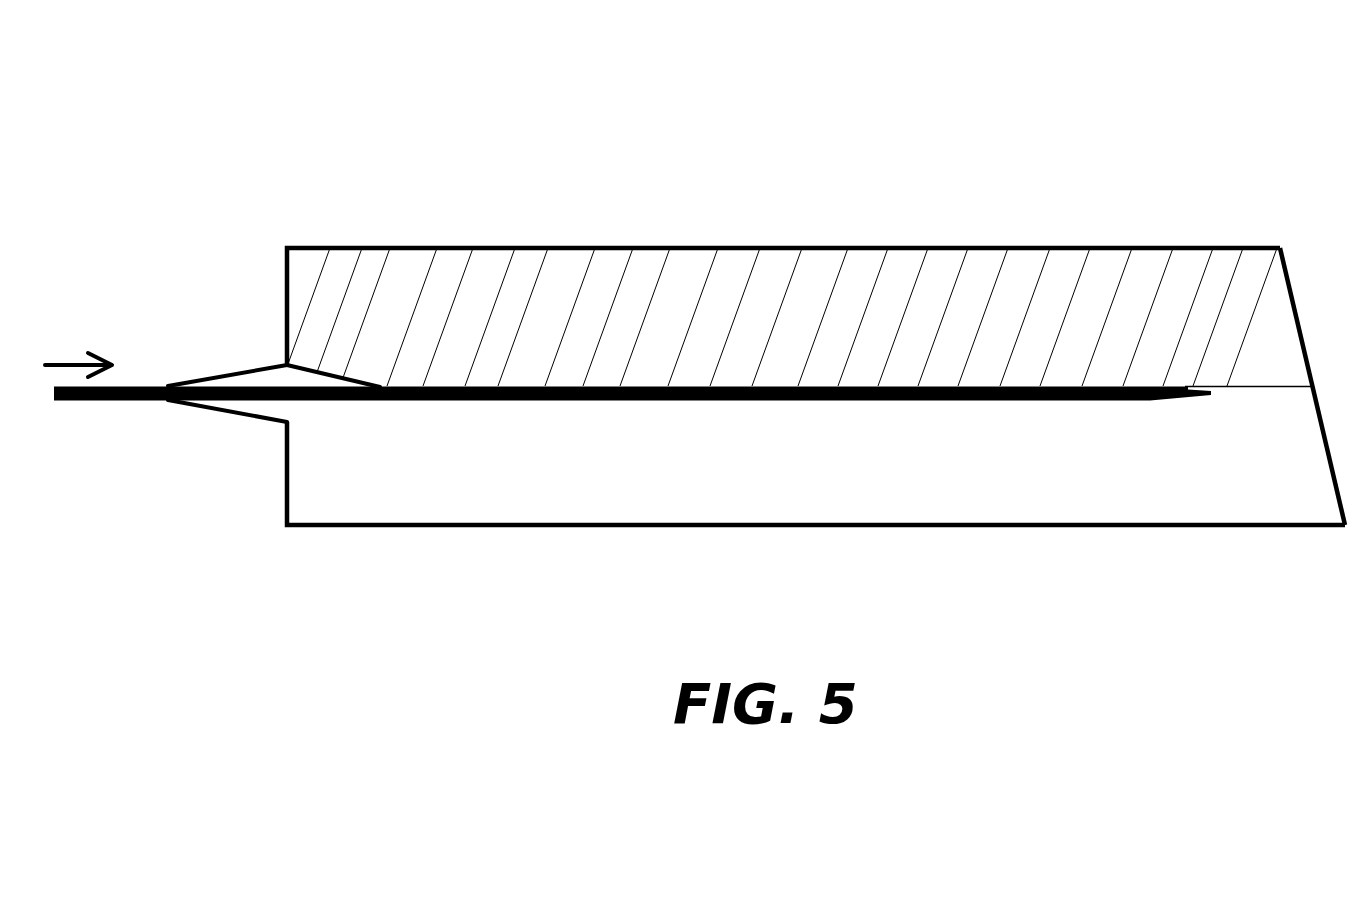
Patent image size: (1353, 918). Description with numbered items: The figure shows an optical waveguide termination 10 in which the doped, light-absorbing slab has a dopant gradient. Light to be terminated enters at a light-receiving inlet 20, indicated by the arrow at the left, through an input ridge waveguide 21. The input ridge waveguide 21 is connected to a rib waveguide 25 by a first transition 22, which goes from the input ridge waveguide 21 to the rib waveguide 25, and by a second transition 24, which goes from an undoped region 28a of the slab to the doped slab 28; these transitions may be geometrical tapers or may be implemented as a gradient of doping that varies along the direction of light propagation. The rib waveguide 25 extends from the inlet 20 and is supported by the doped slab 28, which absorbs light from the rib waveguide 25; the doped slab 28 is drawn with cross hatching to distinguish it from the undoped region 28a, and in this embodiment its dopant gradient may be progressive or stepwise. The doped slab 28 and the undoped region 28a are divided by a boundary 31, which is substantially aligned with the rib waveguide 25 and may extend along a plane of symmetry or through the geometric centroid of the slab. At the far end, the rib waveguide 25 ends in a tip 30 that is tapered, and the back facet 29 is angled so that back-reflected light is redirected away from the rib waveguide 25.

The optical waveguide termination 10 is at (308, 75).
The light-receiving inlet 20 is at (216, 456).
The input ridge waveguide 21 is at (113, 403).
The first transition 22 is at (227, 373).
The second transition 24 is at (318, 380).
The rib waveguide 25 is at (790, 401).
The doped, light-absorbing slab 28 is at (862, 247).
The undoped region 28a is at (497, 463).
The back facet 29 is at (1298, 320).
The tip 30 is at (1212, 395).
The boundary 31 is at (1240, 385).